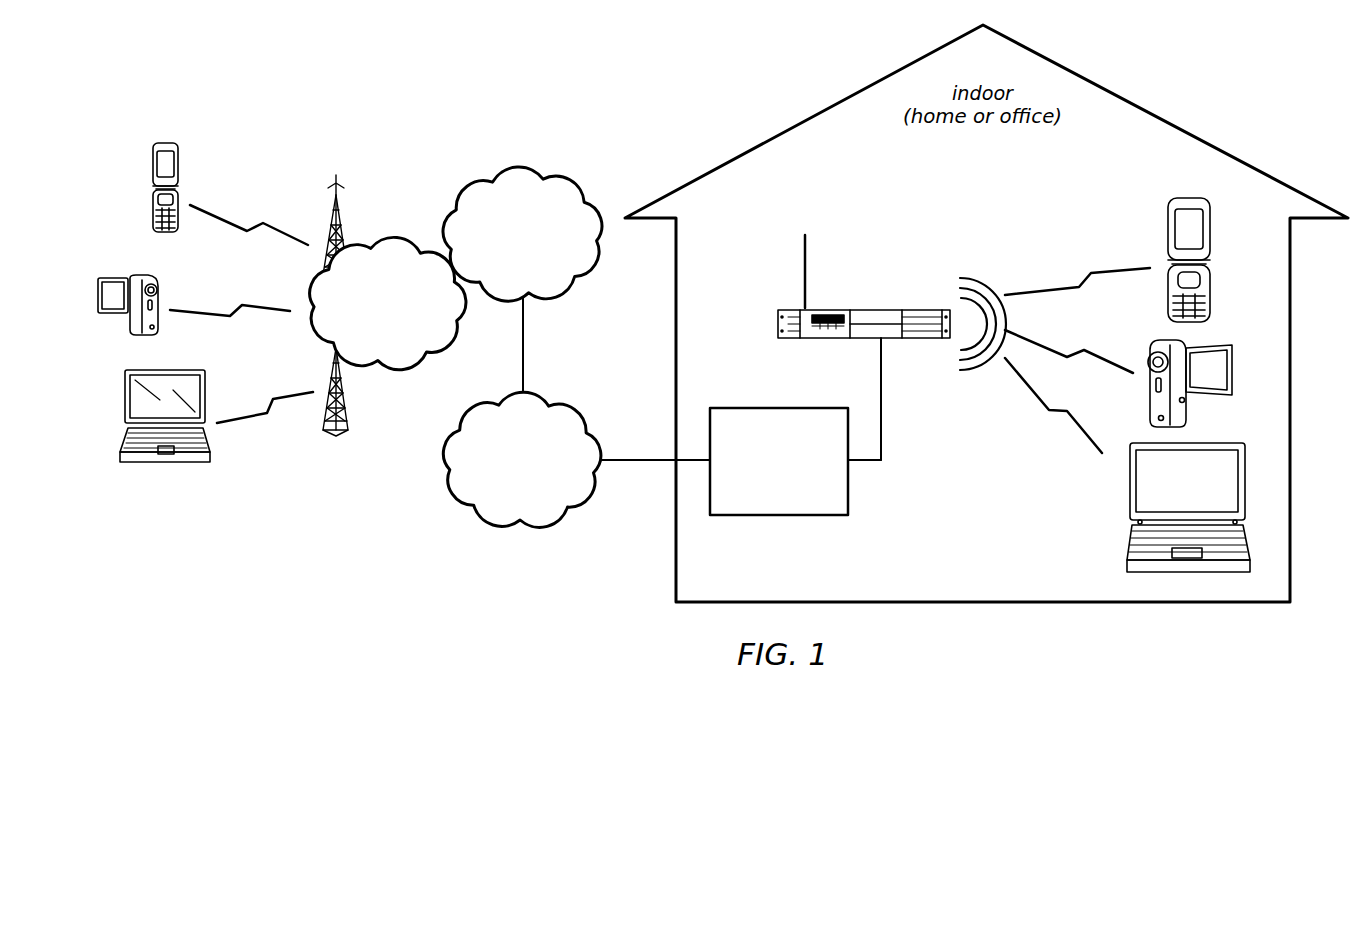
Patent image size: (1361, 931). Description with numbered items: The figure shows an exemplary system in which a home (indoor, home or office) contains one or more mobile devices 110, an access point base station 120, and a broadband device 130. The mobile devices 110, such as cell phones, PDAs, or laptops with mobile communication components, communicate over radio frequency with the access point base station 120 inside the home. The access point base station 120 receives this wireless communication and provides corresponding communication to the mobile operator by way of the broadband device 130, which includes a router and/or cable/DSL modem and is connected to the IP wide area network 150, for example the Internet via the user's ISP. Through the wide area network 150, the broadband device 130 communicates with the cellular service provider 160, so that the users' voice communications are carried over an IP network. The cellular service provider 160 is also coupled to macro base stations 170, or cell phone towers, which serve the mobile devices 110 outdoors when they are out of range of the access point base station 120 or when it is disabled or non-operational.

The mobile devices 110 is at (191, 134).
The access point base station 120 is at (856, 310).
The broadband device 130 is at (796, 493).
The IP wide area network 150 is at (539, 493).
The cellular service provider 160 is at (539, 269).
The macro base stations 170 is at (406, 337).